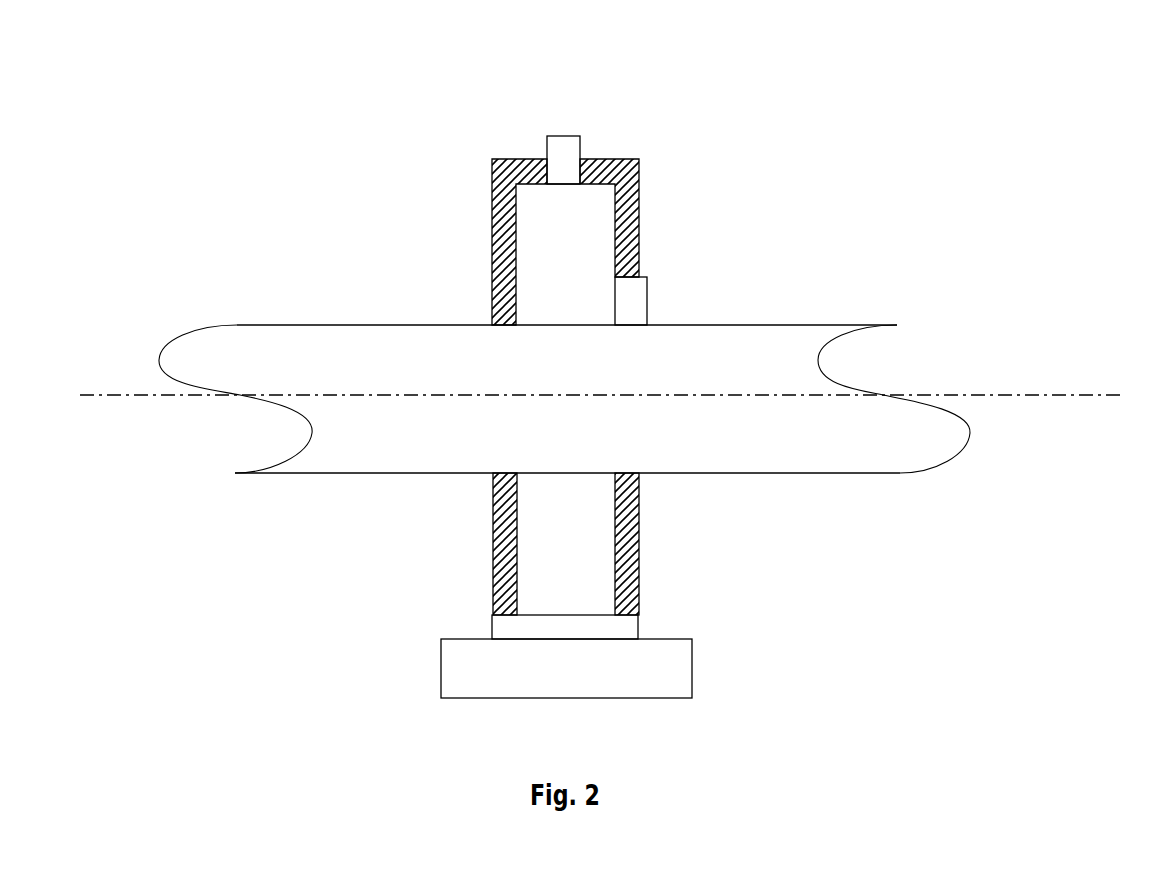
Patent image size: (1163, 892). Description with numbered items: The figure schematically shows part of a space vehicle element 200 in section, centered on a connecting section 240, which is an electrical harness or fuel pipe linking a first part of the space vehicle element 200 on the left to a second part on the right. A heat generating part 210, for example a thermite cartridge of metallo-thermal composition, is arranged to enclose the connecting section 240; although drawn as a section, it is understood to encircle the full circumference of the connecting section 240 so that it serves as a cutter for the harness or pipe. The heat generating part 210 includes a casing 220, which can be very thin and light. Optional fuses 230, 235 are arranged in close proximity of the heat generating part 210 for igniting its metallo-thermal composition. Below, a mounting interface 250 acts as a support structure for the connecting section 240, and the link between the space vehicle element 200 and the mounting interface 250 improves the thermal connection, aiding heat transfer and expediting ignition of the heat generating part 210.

The space vehicle element 200 is at (298, 86).
The heat generating part 210 is at (540, 535).
The casing 220 is at (492, 262).
The fuse 230 is at (568, 147).
The fuse 235 is at (637, 302).
The connecting section 240 is at (917, 444).
The mounting interface 250 is at (665, 671).